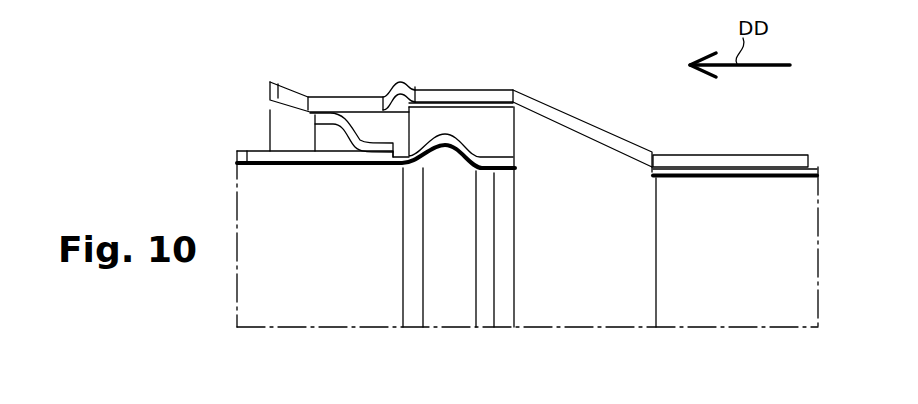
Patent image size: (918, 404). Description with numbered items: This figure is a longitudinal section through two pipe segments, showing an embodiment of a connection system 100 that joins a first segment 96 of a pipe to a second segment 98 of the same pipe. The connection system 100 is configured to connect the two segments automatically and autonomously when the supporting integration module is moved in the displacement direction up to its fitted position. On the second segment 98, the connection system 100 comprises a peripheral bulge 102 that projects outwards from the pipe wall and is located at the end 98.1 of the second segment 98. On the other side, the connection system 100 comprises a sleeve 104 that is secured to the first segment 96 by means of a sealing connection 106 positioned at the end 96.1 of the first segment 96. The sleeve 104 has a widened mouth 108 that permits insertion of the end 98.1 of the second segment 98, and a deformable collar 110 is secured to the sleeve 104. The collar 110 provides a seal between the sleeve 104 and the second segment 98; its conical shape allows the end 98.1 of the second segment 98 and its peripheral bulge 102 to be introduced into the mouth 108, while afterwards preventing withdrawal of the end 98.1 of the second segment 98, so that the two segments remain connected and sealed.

The first segment 96 is at (818, 167).
The end of the first segment 96.1 is at (735, 283).
The second segment 98 is at (243, 149).
The end of the second segment 98.1 is at (443, 292).
The connection system 100 is at (604, 118).
The peripheral bulge 102 is at (452, 143).
The sleeve 104 is at (532, 108).
The sealing connection 106 is at (777, 170).
The widened mouth 108 is at (357, 103).
The deformable collar 110 is at (337, 135).